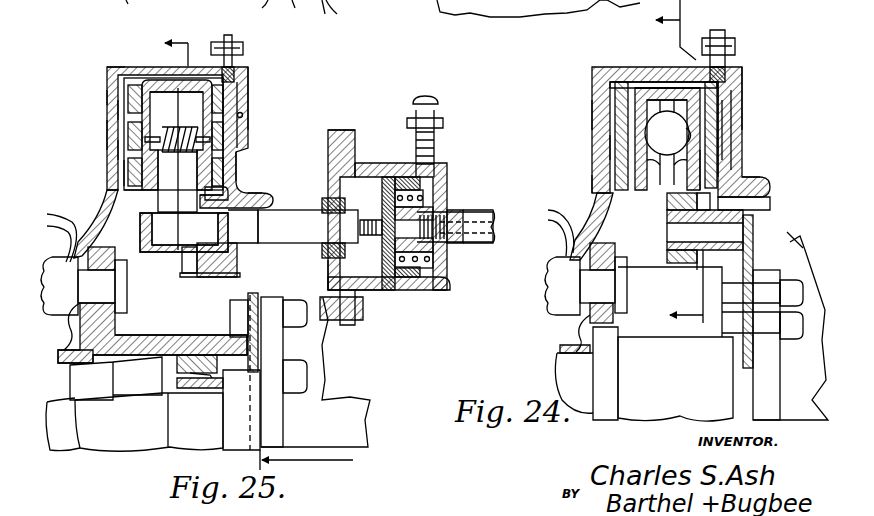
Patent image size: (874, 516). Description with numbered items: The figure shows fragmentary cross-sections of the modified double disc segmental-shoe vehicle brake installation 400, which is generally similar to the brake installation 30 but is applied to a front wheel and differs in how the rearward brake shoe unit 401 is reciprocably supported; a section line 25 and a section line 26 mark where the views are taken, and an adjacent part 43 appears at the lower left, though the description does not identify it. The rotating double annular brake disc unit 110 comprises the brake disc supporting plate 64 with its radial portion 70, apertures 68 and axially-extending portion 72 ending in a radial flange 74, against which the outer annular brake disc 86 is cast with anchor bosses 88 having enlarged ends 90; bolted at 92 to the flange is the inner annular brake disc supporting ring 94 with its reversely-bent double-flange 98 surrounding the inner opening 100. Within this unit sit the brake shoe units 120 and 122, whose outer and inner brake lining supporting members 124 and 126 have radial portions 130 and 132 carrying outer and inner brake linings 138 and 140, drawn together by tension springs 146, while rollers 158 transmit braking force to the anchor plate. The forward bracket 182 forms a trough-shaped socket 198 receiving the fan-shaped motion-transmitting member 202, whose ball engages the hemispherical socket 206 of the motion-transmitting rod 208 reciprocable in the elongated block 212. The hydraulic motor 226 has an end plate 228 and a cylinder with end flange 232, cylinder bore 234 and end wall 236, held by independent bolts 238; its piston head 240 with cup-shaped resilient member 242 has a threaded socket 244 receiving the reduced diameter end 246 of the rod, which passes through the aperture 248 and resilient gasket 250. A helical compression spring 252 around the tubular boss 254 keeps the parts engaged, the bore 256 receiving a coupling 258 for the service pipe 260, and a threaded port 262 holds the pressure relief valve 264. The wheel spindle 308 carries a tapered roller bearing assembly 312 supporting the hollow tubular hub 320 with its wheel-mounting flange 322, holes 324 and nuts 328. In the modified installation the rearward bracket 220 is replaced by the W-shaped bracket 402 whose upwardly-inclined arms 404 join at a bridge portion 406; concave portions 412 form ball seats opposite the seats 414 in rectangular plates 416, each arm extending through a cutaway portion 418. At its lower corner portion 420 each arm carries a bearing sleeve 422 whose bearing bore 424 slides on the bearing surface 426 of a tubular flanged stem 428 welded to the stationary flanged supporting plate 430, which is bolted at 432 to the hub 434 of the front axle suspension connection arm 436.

In FIG. 25, the section line 25— 25 is at (252, 253).
In FIG. 25, the section line 26— 26 is at (256, 8).
In FIG. 24, the section line 26— 26 is at (653, 163).
In FIG. 25, the brake installation 30 is at (254, 88).
In FIG. 24, the brake installation 30 is at (748, 93).
In FIG. 25, the bracket 43 is at (58, 355).
In FIG. 24, the bracket 43 is at (558, 352).
In FIG. 25, the brake disc supporting plate 64 is at (72, 248).
In FIG. 24, the brake disc supporting plate 64 is at (572, 252).
In FIG. 25, the brake disc securing apertures 68 is at (108, 112).
In FIG. 25, the radial portion 70 is at (110, 145).
In FIG. 24, the radial portion 70 is at (592, 112).
In FIG. 25, the axially-extending portion 72 is at (143, 78).
In FIG. 25, the radial flange 74 is at (229, 35).
In FIG. 25, the outer annular brake disc 86 is at (118, 152).
In FIG. 24, the outer annular brake disc 86 is at (605, 147).
In FIG. 25, the anchor bosses 88 is at (108, 125).
In FIG. 25, the enlarged boss ends 90 is at (108, 100).
In FIG. 25, the bolts 92 is at (243, 48).
In FIG. 25, the inner annular brake disc supporting ring 94 is at (243, 110).
In FIG. 24, the inner annular brake disc supporting ring 94 is at (710, 123).
In FIG. 25, the reversely-bent double-flange 98 is at (256, 188).
In FIG. 24, the reversely-bent double-flange 98 is at (755, 178).
In FIG. 25, the inner opening 100 is at (280, 200).
In FIG. 25, the double annular brake disc unit 110 is at (108, 68).
In FIG. 24, the double annular brake disc unit 110 is at (590, 68).
In FIG. 25, the outer brake shoe unit 120 is at (118, 66).
In FIG. 24, the outer brake shoe unit 120 is at (600, 198).
In FIG. 25, the inner brake shoe unit 122 is at (248, 102).
In FIG. 24, the inner brake shoe unit 122 is at (746, 70).
In FIG. 25, the outer brake lining supporting member 124 is at (157, 80).
In FIG. 24, the outer brake lining supporting member 124 is at (636, 82).
In FIG. 25, the inner brake lining supporting member 126 is at (198, 72).
In FIG. 24, the inner brake lining supporting member 126 is at (685, 82).
In FIG. 25, the radial portion 130 is at (140, 195).
In FIG. 24, the radial portion 130 is at (600, 186).
In FIG. 25, the radial portion 132 is at (212, 186).
In FIG. 24, the radial portion 132 is at (728, 158).
In FIG. 25, the outer brake lining 138 is at (126, 170).
In FIG. 24, the outer brake lining 138 is at (618, 128).
In FIG. 25, the inner brake lining 140 is at (248, 165).
In FIG. 25, the tension springs 146 is at (173, 160).
In FIG. 24, the roller 158 is at (667, 142).
In FIG. 25, the forward bracket 182 is at (140, 203).
In FIG. 25, the trough-shaped socket 198 is at (142, 222).
In FIG. 25, the fan-shaped motion-transmitting member 202 is at (185, 229).
In FIG. 25, the hemispherical socket 206 is at (243, 226).
In FIG. 25, the motion-transmitting rod 208 is at (308, 226).
In FIG. 25, the elongated block 212 is at (215, 280).
In FIG. 25, the rearward bracket 220 is at (190, 283).
In FIG. 25, the hydraulic motor 226 is at (448, 155).
In FIG. 25, the end plate 228 is at (326, 145).
In FIG. 25, the end flange 232 is at (342, 130).
In FIG. 25, the cylinder bore 234 is at (366, 297).
In FIG. 25, the end wall 236 is at (452, 284).
In FIG. 25, the independent bolts 238 is at (358, 318).
In FIG. 25, the piston head 240 is at (372, 290).
In FIG. 25, the cup-shaped resilient member 242 is at (425, 195).
In FIG. 25, the threaded socket 244 is at (365, 235).
In FIG. 25, the reduced diameter end 246 is at (362, 224).
In FIG. 25, the aperture 248 is at (336, 272).
In FIG. 25, the resilient gasket 250 is at (328, 197).
In FIG. 25, the helical compression spring 252 is at (428, 200).
In FIG. 25, the tubular boss 254 is at (463, 200).
In FIG. 25, the bore 256 is at (445, 261).
In FIG. 25, the coupling 258 is at (480, 210).
In FIG. 25, the hydraulic pressure fluid service pipe 260 is at (492, 228).
In FIG. 25, the threaded port 262 is at (415, 145).
In FIG. 25, the pressure relief valve 264 is at (440, 122).
In FIG. 25, the wheel spindle 308 is at (134, 422).
In FIG. 25, the tapered roller bearing assembly 312 is at (185, 380).
In FIG. 25, the hollow tubular hub 320 is at (168, 340).
In FIG. 24, the hollow tubular hub 320 is at (644, 374).
In FIG. 25, the wheel-mounting flange 322 is at (100, 322).
In FIG. 25, the holes 324 is at (102, 280).
In FIG. 24, the holes 324 is at (603, 290).
In FIG. 25, the nuts 328 is at (59, 286).
In FIG. 24, the nuts 328 is at (562, 286).
In FIG. 25, the modified brake installation 400 is at (262, 72).
In FIG. 24, the modified brake installation 400 is at (748, 80).
In FIG. 24, the rearward brake shoe unit 401 is at (740, 115).
In FIG. 25, the W-shaped bracket 402 is at (347, 11).
In FIG. 24, the upwardly-inclined arms 404 is at (737, 106).
In FIG. 24, the bridge portion 406 is at (696, 268).
In FIG. 24, the concave portions 412 is at (728, 142).
In FIG. 24, the opposite ball seats 414 is at (640, 110).
In FIG. 24, the rectangular plates 416 is at (655, 168).
In FIG. 24, the cutaway portion 418 is at (666, 196).
In FIG. 25, the lower corner portion 420 is at (247, 20).
In FIG. 25, the bearing sleeve 422 is at (208, 12).
In FIG. 24, the bearing sleeve 422 is at (667, 260).
In FIG. 24, the bearing bore 424 is at (690, 205).
In FIG. 24, the bearing surface 426 is at (692, 268).
In FIG. 24, the tubular flanged stem 428 is at (705, 230).
In FIG. 25, the stationary flanged supporting plate 430 is at (252, 371).
In FIG. 24, the stationary flanged supporting plate 430 is at (777, 207).
In FIG. 25, the bolts 432 is at (325, 360).
In FIG. 24, the bolts 432 is at (784, 340).
In FIG. 25, the hub 434 is at (270, 415).
In FIG. 24, the hub 434 is at (760, 386).
In FIG. 24, the front axle suspension connection arm 436 is at (796, 242).